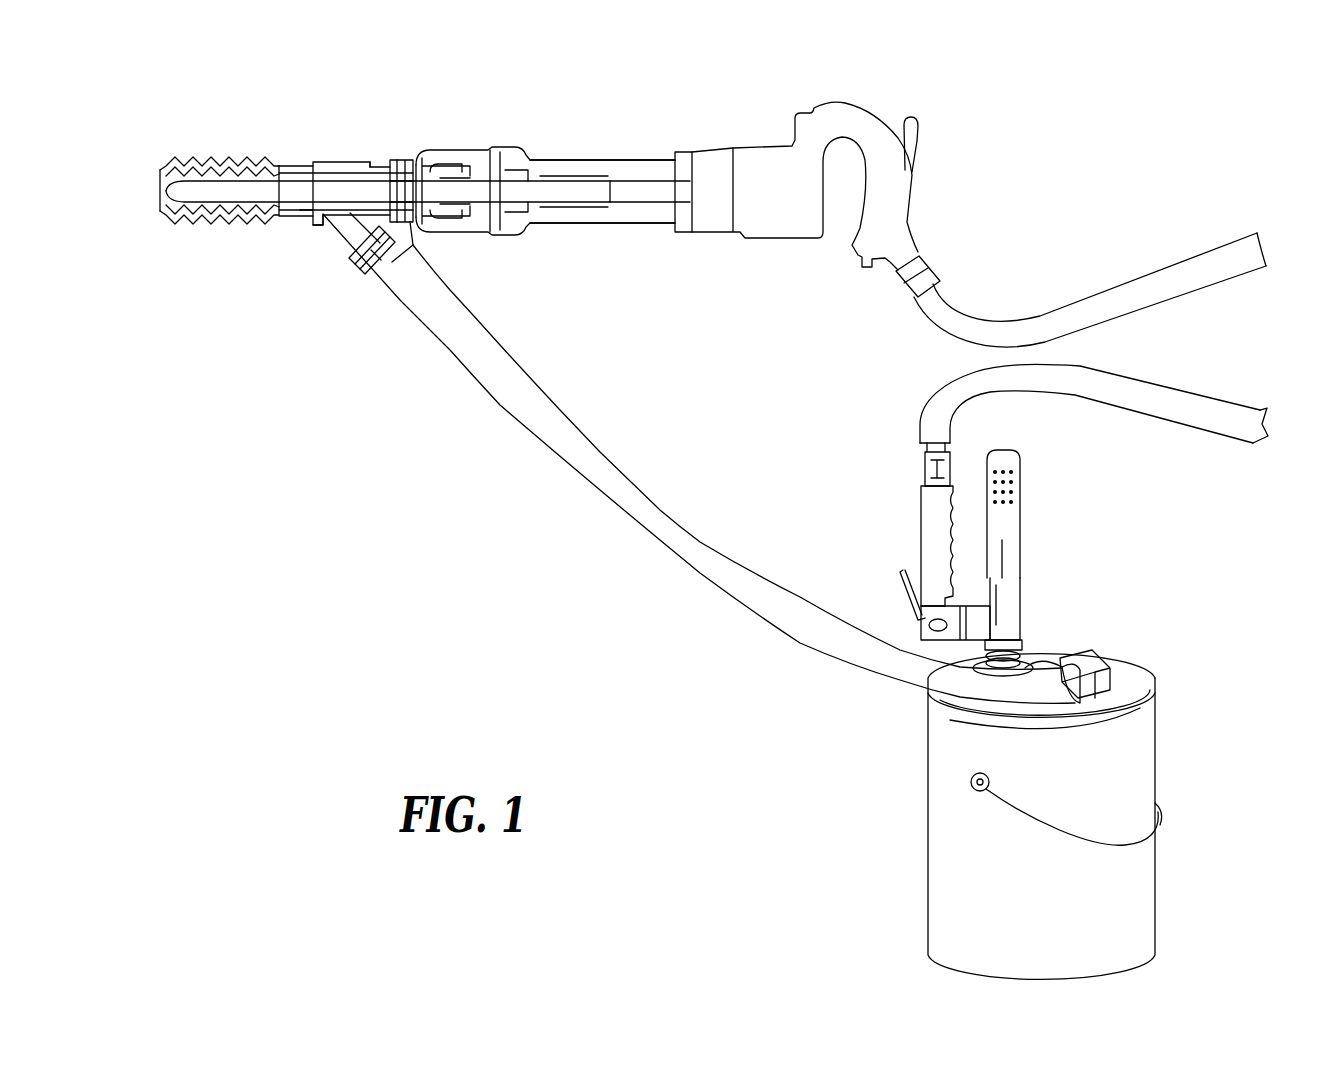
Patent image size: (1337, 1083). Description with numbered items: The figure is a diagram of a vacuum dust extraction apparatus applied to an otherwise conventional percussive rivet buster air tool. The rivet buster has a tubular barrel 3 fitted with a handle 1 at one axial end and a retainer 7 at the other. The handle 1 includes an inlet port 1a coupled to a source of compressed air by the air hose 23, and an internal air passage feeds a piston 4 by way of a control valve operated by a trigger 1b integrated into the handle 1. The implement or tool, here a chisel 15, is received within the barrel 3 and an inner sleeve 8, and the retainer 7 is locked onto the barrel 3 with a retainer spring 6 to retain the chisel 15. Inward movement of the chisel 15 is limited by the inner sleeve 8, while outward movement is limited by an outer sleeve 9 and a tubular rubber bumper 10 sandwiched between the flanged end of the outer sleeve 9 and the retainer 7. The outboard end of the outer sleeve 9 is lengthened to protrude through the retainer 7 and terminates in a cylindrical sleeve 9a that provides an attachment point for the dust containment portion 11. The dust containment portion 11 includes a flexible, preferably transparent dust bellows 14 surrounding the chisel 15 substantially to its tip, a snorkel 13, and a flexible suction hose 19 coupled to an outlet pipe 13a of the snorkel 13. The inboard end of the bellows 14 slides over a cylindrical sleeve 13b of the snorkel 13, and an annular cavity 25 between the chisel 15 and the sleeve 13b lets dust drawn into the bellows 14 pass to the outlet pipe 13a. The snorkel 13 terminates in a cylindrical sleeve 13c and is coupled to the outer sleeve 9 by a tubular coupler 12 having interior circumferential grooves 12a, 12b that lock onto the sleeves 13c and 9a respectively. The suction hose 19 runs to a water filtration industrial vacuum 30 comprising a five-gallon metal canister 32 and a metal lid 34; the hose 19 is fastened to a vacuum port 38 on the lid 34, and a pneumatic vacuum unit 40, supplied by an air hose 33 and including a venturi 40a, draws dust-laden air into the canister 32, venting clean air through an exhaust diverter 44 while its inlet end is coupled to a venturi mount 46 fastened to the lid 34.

The handle 1 is at (765, 240).
The inlet port 1a is at (902, 290).
The trigger 1b is at (915, 132).
The tubular barrel 3 is at (580, 225).
The piston 4 is at (570, 190).
The retainer spring 6 is at (505, 160).
The retainer 7 is at (470, 150).
The inner sleeve 8 is at (462, 228).
The outer sleeve 9 is at (437, 166).
The cylindrical sleeve 9a is at (408, 232).
The tubular rubber bumper 10 is at (440, 222).
The dust containment portion 11 is at (183, 126).
The tubular coupler 12 is at (384, 262).
The circumferential groove 12a is at (395, 168).
The circumferential groove 12b is at (408, 168).
The snorkel 13 is at (343, 168).
The outlet pipe 13a is at (338, 222).
The cylindrical sleeve 13b is at (290, 222).
The cylindrical sleeve 13c is at (372, 166).
The dust bellows 14 is at (216, 232).
The chisel 15 is at (216, 190).
The suction hose 19 is at (460, 362).
The air hose 23 is at (1112, 305).
The annular cavity 25 is at (290, 170).
The water filtration industrial vacuum 30 is at (1143, 594).
The canister 32 is at (1145, 760).
The air hose 33 is at (1115, 398).
The lid 34 is at (1147, 682).
The vacuum port 38 is at (1100, 660).
The vacuum unit 40 is at (900, 532).
The venturi 40a is at (1010, 612).
The exhaust diverter 44 is at (1015, 518).
The venturi mount 46 is at (1043, 660).